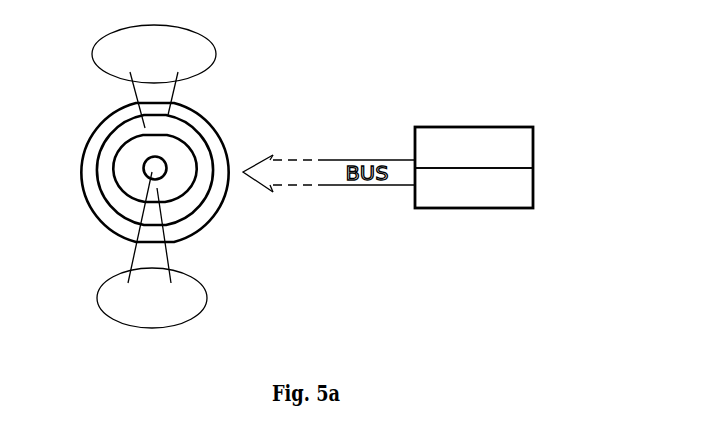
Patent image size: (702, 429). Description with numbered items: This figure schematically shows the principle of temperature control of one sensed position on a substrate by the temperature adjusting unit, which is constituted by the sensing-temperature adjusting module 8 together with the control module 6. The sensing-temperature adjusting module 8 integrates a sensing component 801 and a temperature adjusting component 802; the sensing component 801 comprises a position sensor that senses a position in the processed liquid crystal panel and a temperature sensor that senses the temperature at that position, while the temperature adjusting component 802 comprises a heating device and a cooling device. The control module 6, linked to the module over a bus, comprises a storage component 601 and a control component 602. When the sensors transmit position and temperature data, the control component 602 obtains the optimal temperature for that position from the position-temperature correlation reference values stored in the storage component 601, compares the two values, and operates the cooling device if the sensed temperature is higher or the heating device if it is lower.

The sensing-temperature adjusting module 8 is at (61, 182).
The temperature adjusting component 802 is at (186, 76).
The sensing component 801 is at (182, 259).
The control module 6 is at (497, 134).
The storage component 601 is at (474, 148).
The control component 602 is at (474, 188).